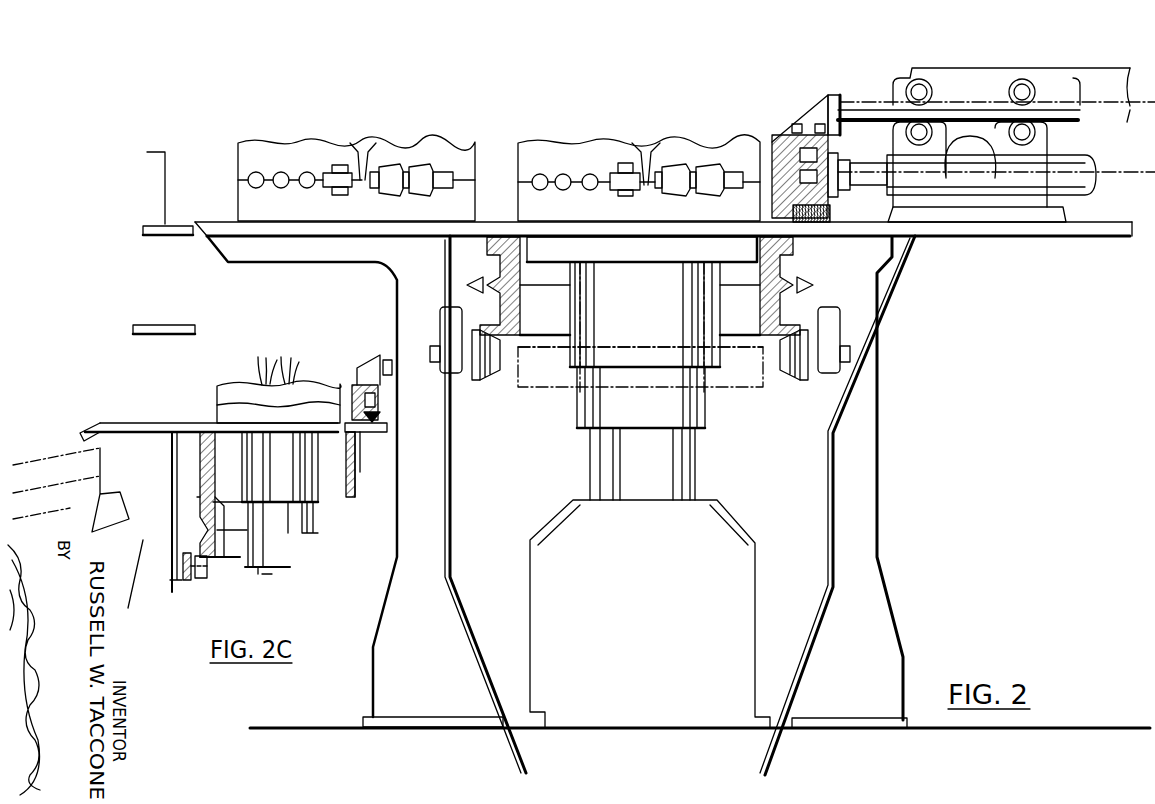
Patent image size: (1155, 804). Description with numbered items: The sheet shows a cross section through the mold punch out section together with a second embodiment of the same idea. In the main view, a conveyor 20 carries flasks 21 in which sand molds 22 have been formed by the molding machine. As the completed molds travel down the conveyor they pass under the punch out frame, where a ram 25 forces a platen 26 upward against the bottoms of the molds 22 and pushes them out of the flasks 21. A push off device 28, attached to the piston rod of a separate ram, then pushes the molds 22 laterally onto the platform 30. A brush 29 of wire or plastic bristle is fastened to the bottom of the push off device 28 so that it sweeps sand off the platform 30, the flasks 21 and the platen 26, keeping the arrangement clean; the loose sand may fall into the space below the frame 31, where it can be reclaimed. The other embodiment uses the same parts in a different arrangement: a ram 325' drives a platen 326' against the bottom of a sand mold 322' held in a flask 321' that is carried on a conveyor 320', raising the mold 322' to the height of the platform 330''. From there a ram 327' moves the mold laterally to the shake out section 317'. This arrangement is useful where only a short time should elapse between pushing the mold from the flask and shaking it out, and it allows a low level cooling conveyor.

In FIG. 2, the conveyor 20 is at (832, 340).
In FIG. 2, the flask 21 is at (782, 291).
In FIG. 2, the sand mold 22 is at (548, 158).
In FIG. 2, the ram 25 is at (655, 467).
In FIG. 2, the platen 26 is at (757, 256).
In FIG. 2, the push off device 28 is at (793, 163).
In FIG. 2, the brush 29 is at (825, 222).
In FIG. 2, the platform 30 is at (893, 232).
In FIG. 2, the frame 31 is at (863, 505).
In FIG. 2C, the shake out section 317' is at (78, 480).
In FIG. 2C, the conveyor 320' is at (211, 585).
In FIG. 2C, the flask 321' is at (226, 516).
In FIG. 2C, the mold 322' is at (279, 374).
In FIG. 2C, the ram 325' is at (302, 506).
In FIG. 2C, the platen 326' is at (361, 462).
In FIG. 2C, the ram 327' is at (364, 368).
In FIG. 2C, the platform 330'' is at (209, 411).